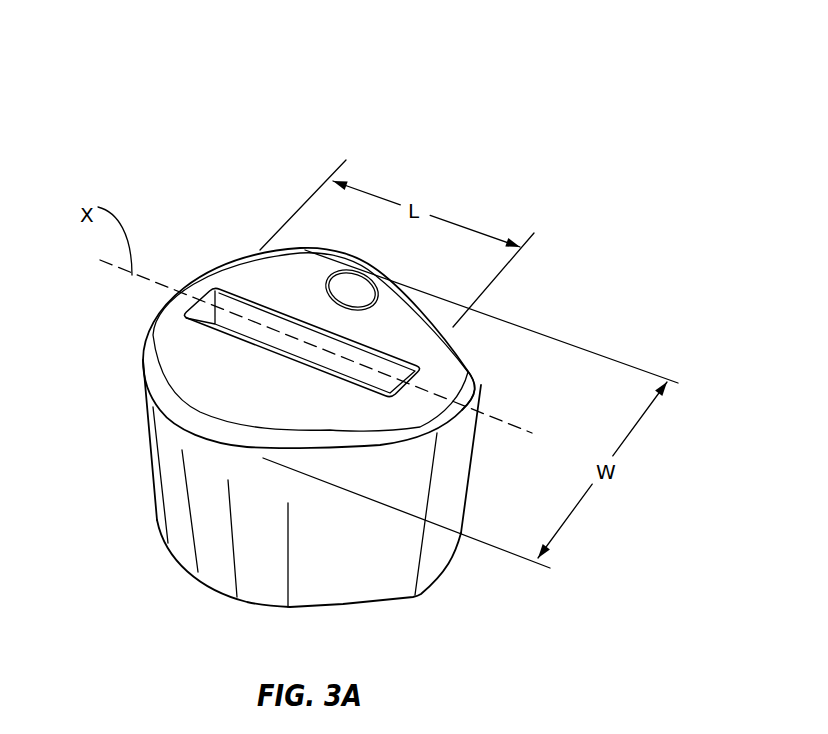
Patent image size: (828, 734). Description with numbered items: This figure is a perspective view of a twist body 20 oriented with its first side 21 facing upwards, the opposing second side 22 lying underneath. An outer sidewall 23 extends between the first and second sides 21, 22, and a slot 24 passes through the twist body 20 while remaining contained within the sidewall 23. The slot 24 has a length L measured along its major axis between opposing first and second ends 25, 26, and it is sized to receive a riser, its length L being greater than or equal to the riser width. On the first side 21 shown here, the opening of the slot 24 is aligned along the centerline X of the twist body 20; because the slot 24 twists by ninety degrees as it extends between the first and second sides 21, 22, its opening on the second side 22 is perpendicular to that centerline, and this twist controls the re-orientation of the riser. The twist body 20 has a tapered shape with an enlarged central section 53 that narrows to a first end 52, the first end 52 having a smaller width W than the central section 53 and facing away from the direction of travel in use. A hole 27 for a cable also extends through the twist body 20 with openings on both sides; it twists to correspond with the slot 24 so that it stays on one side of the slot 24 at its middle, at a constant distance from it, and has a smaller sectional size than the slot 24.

The twist body 20 is at (193, 137).
The first side 21 is at (205, 378).
The second side 22 is at (343, 605).
The outer sidewall 23 is at (190, 495).
The slot 24 is at (362, 358).
The first end 25 is at (210, 292).
The second end 26 is at (479, 364).
The hole 27 is at (352, 292).
The first end 52 is at (447, 498).
The central section 53 is at (240, 397).